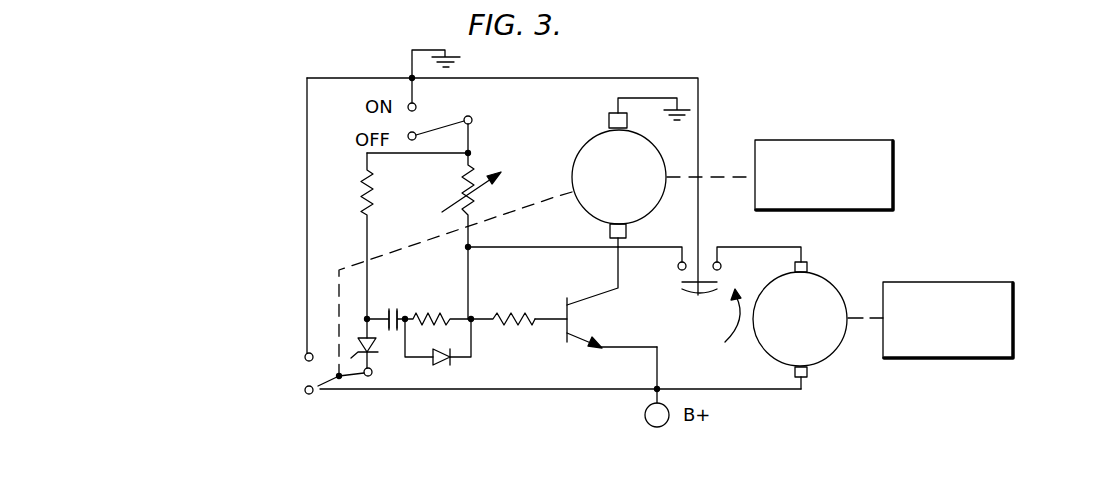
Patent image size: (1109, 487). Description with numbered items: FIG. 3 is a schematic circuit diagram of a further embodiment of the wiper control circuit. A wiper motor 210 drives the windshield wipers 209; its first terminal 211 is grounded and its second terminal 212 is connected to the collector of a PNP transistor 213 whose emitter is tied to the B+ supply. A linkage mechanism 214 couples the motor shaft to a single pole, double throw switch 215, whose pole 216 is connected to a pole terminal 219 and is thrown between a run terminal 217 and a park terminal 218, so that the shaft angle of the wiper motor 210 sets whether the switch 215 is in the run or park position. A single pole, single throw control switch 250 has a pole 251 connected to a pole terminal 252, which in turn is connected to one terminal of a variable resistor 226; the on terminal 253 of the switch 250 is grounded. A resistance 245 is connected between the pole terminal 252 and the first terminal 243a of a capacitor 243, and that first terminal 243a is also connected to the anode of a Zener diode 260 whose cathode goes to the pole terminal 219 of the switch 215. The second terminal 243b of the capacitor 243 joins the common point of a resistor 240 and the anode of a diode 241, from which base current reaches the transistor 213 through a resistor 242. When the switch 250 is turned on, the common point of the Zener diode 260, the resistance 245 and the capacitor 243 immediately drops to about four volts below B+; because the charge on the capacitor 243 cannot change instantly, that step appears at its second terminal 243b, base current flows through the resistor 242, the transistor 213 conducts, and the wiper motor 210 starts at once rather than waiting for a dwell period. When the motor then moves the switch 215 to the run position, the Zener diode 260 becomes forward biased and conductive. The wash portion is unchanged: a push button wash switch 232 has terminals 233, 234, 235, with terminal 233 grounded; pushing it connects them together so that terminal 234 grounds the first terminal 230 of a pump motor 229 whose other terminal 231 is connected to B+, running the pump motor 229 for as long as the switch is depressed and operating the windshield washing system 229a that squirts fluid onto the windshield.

The windshield wipers 209 is at (822, 140).
The wiper motor 210 is at (648, 207).
The first terminal of wiper motor 211 is at (608, 122).
The second terminal of wiper motor 212 is at (610, 231).
The transistor 213 is at (565, 326).
The linkage mechanism 214 is at (553, 198).
The single pole, double throw switch 215 is at (200, 359).
The pole 216 is at (322, 386).
The run terminal 217 is at (306, 353).
The park terminal 218 is at (306, 390).
The pole terminal 219 is at (370, 377).
The variable resistor 226 is at (462, 175).
The pump motor 229 is at (847, 297).
The windshield washing system 229a is at (948, 282).
The first terminal of pump motor 230 is at (810, 268).
The second terminal of pump motor 231 is at (812, 373).
The wash switch 232 is at (705, 320).
The wash switch terminal 233 is at (682, 284).
The wash switch terminal 234 is at (721, 266).
The wash switch terminal 235 is at (678, 265).
The resistor 240 is at (425, 310).
The diode 241 is at (458, 363).
The resistor 242 is at (509, 310).
The capacitor 243 is at (388, 309).
The first terminal of capacitor 243a is at (390, 332).
The second terminal of capacitor 243b is at (407, 312).
The resistance 245 is at (361, 177).
The control switch 250 is at (430, 110).
The pole 251 is at (408, 134).
The pole terminal 252 is at (472, 119).
The on terminal 253 is at (408, 104).
The Zener diode 260 is at (360, 340).